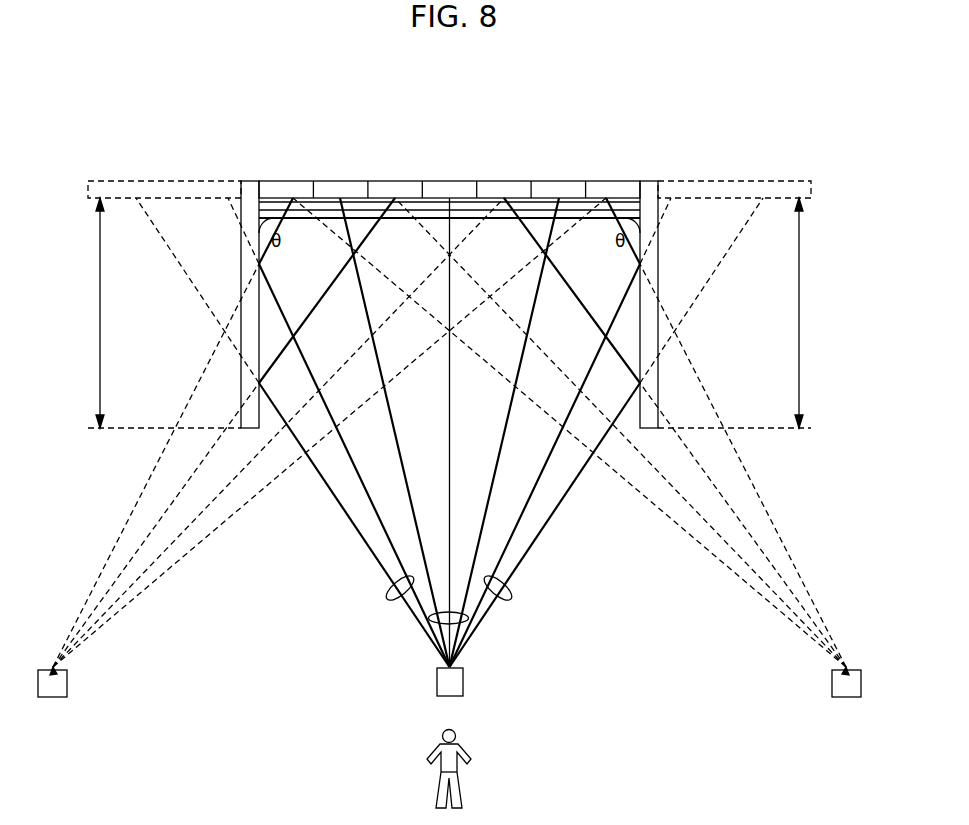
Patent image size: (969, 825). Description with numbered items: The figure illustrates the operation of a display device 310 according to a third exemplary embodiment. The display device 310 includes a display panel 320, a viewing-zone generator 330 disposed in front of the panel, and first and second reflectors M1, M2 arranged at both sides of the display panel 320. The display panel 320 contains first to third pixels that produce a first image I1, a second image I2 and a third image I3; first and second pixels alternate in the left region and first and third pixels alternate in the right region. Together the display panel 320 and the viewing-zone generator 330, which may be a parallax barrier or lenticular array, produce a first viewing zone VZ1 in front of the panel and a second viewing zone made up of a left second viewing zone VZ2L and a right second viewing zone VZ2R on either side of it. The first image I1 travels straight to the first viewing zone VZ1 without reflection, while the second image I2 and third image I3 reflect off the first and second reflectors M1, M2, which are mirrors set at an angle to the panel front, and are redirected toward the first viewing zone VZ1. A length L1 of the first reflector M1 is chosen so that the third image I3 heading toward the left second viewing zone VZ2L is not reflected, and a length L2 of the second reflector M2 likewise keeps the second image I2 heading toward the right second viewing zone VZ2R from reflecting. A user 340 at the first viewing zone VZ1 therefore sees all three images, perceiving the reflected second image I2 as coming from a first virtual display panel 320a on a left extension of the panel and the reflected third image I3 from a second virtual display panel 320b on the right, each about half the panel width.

The display device 310 is at (422, 185).
The display panel 320 is at (707, 273).
The first virtual display panel 320a is at (128, 180).
The second virtual display panel 320b is at (776, 180).
The viewing-zone generator 330 is at (484, 218).
The user 340 is at (468, 750).
The first reflector M1 is at (241, 415).
The second reflector M2 is at (658, 413).
The length of the first reflector L1 is at (97, 313).
The length of the second reflector L2 is at (799, 313).
The first viewing zone VZ1 is at (448, 694).
The left second viewing zone VZ2L is at (52, 696).
The right second viewing zone VZ2R is at (849, 696).
The first image I1 is at (427, 636).
The second image I2 is at (383, 600).
The third image I3 is at (514, 600).